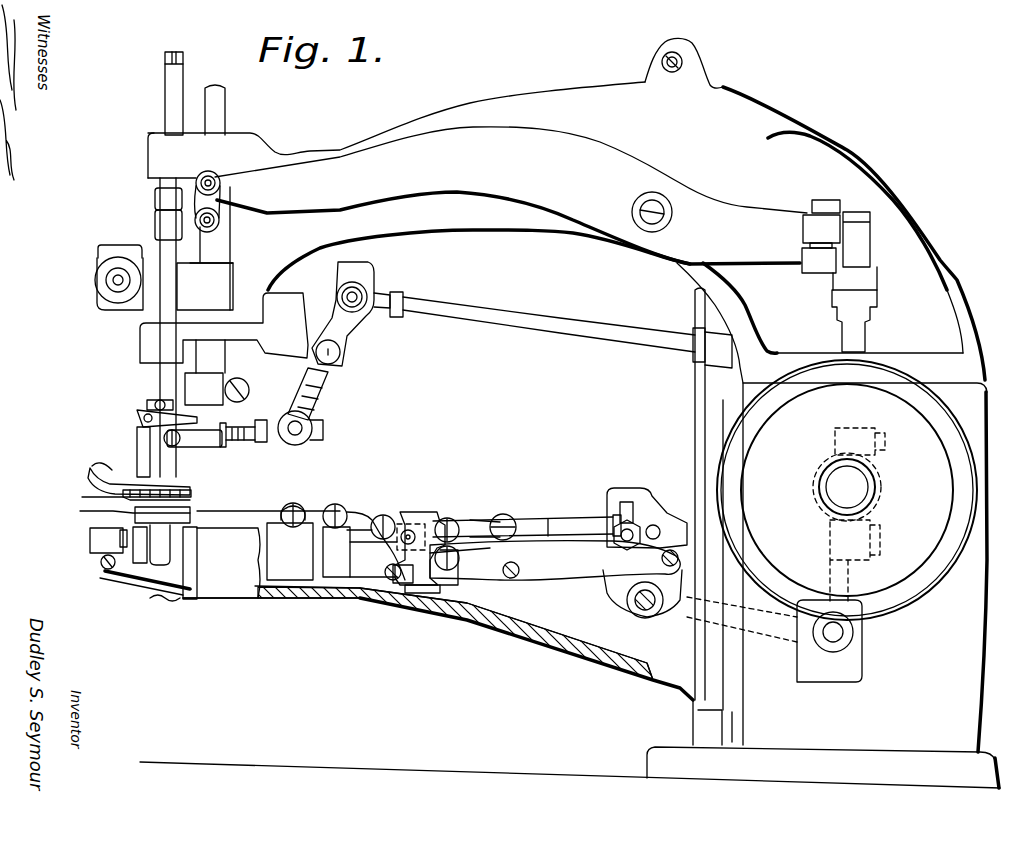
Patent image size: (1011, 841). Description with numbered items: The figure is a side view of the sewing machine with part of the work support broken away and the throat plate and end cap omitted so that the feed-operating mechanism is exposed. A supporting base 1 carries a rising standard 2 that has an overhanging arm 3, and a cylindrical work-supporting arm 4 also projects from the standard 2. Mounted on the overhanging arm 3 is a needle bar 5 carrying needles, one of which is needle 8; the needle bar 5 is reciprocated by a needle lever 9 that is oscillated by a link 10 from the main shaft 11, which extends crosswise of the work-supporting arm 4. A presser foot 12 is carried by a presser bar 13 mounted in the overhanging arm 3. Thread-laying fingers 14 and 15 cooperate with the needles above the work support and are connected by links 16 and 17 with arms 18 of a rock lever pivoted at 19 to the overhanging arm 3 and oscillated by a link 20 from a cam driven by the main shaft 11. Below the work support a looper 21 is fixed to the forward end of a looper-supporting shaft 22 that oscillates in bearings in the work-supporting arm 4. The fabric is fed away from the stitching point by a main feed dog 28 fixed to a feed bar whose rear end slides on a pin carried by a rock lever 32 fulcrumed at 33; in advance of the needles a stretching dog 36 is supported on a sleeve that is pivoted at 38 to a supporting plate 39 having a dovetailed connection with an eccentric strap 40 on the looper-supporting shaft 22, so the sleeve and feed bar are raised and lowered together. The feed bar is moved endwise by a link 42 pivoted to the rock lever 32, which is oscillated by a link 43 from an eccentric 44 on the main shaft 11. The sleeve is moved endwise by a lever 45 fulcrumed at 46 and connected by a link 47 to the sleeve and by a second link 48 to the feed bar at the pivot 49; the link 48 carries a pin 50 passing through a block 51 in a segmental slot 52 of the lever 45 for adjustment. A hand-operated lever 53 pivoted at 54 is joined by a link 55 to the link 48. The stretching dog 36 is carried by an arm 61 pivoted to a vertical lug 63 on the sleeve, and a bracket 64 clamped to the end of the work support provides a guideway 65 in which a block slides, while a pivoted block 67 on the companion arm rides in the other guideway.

The supporting base 1 is at (763, 760).
The standard 2 is at (940, 290).
The overhanging arm 3 is at (492, 226).
The cylindrical work-supporting arm 4 is at (438, 605).
The needle bar 5 is at (167, 312).
The needle 8 is at (171, 264).
The needle lever 9 is at (477, 135).
The link 10 is at (227, 207).
The main shaft 11 is at (853, 487).
The presser foot 12 is at (130, 488).
The presser bar 13 is at (212, 357).
The thread-laying finger 14 is at (152, 425).
The thread-laying finger 15 is at (135, 452).
The link 16 is at (248, 448).
The link 17 is at (250, 433).
The arms of rock lever 18 is at (338, 387).
The pivot 19 is at (353, 352).
The link 20 is at (517, 313).
The looper 21 is at (110, 572).
The looper-supporting shaft 22 is at (377, 555).
The main feed dog 28 is at (125, 504).
The rock lever 32 is at (625, 492).
The fulcrum 33 is at (645, 618).
The stretching dog 36 is at (125, 496).
The pivot 38 is at (295, 502).
The supporting plate 39 is at (331, 510).
The eccentric strap 40 is at (298, 565).
The link 42 is at (540, 528).
The link 43 is at (855, 548).
The eccentric 44 is at (877, 493).
The lever 45 is at (420, 595).
The fulcrum 46 is at (420, 523).
The link 47 is at (364, 516).
The second link 48 is at (441, 523).
The pivot 49 is at (507, 520).
The pin 50 is at (430, 513).
The block 51 is at (410, 585).
The segmental slot 52 is at (440, 593).
The hand-operated lever 53 is at (590, 570).
The pivot 54 is at (511, 578).
The link 55 is at (530, 485).
The arm 61 is at (128, 518).
The vertical lug 63 is at (90, 578).
The bracket 64 is at (152, 574).
The guideway 65 is at (98, 560).
The pivoted block 67 is at (112, 540).